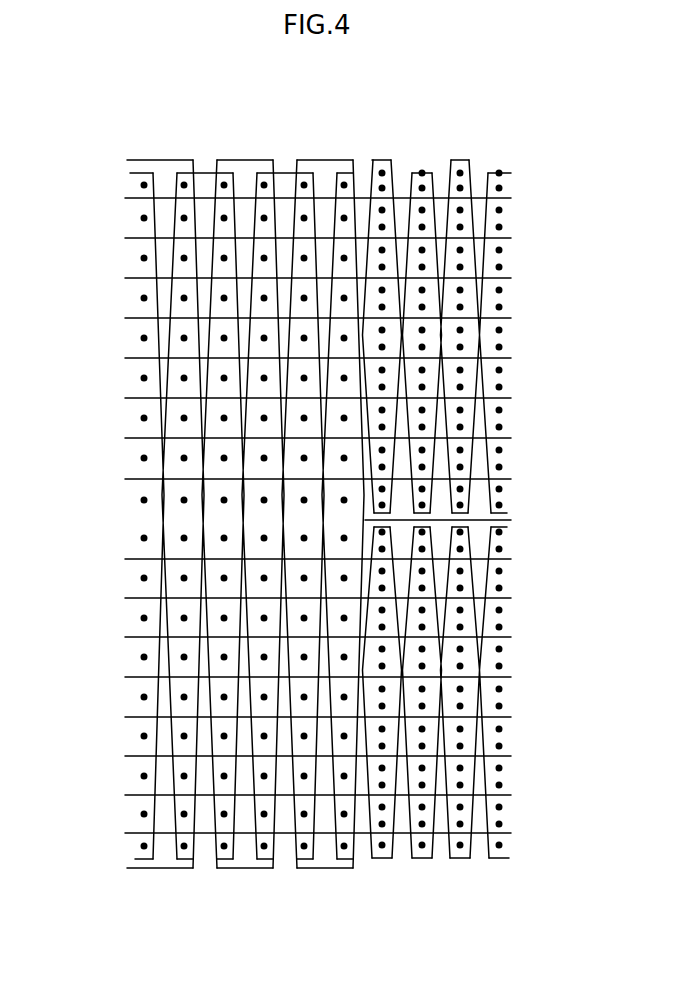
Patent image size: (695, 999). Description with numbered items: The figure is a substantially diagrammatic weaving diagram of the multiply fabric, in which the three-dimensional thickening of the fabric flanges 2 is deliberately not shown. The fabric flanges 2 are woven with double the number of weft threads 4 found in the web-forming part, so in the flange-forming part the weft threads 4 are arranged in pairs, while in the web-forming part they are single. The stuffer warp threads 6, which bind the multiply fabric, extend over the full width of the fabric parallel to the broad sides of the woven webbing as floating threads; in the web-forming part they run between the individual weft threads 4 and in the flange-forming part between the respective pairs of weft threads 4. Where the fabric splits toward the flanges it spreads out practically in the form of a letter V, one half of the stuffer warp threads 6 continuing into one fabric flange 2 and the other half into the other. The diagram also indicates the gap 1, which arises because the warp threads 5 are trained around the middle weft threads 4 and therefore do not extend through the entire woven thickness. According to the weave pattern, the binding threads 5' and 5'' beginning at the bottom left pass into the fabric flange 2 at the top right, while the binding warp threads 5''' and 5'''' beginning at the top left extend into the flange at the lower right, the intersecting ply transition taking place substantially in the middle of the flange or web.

The gap 1 is at (533, 521).
The fabric flange 2 is at (462, 160).
The weft thread 4 is at (186, 214).
The warp thread 5 is at (452, 704).
The binding thread 5' is at (370, 684).
The binding thread 5'' is at (329, 508).
The binding warp thread 5''' is at (333, 519).
The binding warp thread 5'''' is at (348, 340).
The stuffer warp thread 6 is at (138, 200).